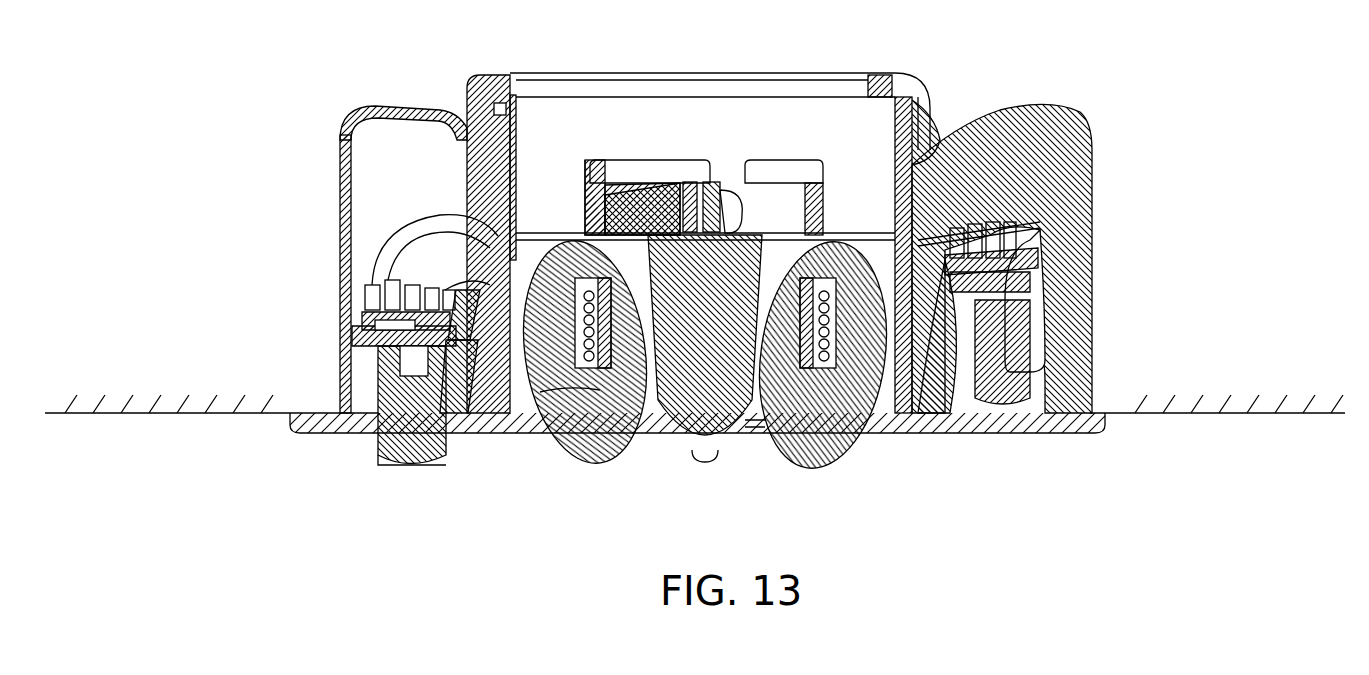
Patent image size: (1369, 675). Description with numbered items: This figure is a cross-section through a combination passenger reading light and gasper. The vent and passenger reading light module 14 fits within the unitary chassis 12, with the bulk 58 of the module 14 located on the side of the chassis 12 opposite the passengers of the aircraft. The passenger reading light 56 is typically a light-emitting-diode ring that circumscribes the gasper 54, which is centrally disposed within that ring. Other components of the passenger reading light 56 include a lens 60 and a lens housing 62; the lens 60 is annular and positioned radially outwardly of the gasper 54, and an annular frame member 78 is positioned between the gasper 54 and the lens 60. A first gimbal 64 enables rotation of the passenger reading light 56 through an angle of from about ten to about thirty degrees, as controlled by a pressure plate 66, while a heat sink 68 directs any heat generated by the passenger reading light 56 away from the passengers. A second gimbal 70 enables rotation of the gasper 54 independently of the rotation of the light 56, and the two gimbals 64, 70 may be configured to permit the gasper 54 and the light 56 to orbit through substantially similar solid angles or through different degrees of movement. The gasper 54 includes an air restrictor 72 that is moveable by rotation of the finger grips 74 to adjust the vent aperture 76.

The unitary chassis 12 is at (190, 414).
The vent and passenger reading light module 14 is at (1116, 283).
The gasper 54 is at (703, 182).
The passenger reading light 56 is at (378, 330).
The bulk of the module 58 is at (1132, 130).
The lens 60 is at (1000, 380).
The lens housing 62 is at (375, 448).
The first gimbal 64 is at (458, 465).
The pressure plate 66 is at (468, 278).
The heat sink 68 is at (1010, 246).
The second gimbal 70 is at (541, 452).
The air restrictor 72 is at (685, 410).
The finger grips 74 is at (824, 455).
The vent aperture 76 is at (740, 434).
The annular frame member 78 is at (906, 165).